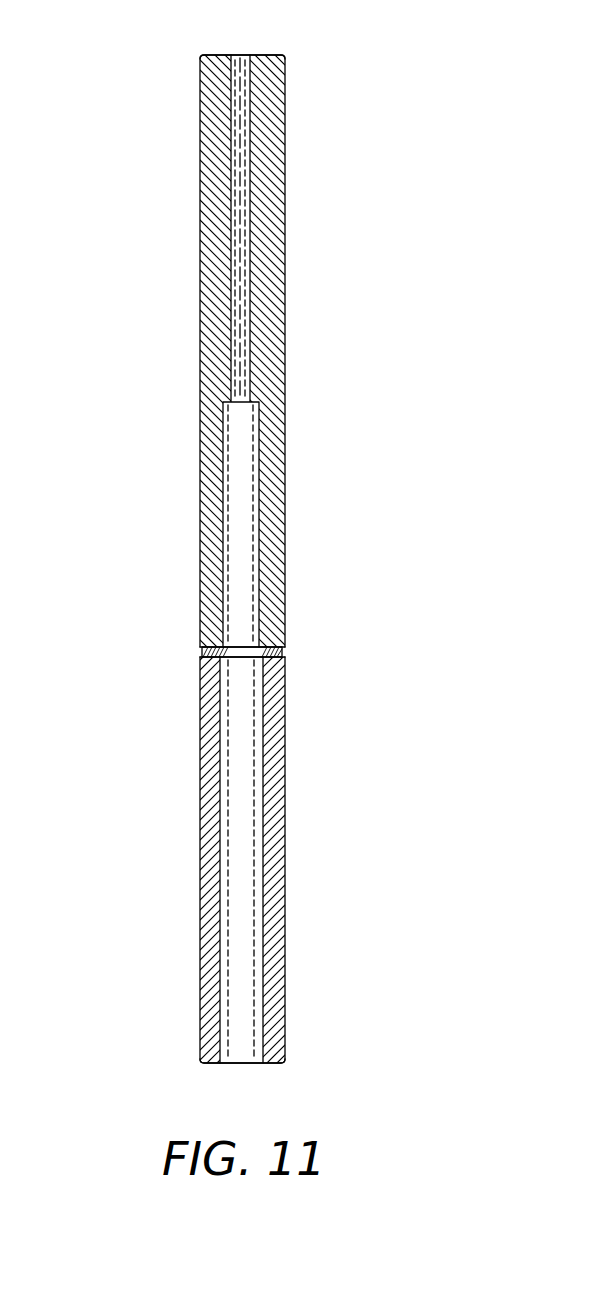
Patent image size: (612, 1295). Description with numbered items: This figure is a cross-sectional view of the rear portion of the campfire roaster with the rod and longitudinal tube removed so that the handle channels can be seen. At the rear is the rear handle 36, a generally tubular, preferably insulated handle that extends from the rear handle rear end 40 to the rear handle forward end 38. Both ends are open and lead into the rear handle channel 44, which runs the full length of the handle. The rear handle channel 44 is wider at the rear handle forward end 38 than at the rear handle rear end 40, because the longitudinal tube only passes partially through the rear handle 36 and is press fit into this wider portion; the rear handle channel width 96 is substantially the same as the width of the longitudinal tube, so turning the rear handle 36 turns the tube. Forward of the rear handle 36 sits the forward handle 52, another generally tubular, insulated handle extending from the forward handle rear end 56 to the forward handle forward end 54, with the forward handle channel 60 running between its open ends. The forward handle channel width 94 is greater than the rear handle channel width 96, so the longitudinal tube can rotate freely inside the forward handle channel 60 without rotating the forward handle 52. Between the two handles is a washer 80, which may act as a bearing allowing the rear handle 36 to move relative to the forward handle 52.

The rear handle 36 is at (285, 375).
The rear handle rear end 40 is at (270, 55).
The rear handle channel 44 is at (240, 610).
The rear handle channel width 96 is at (170, 250).
The washer 80 is at (282, 652).
The rear handle forward end 38 is at (200, 647).
The forward handle rear end 56 is at (203, 657).
The forward handle 52 is at (285, 853).
The forward handle channel 60 is at (242, 878).
The forward handle channel width 94 is at (220, 737).
The forward handle forward end 54 is at (270, 1065).